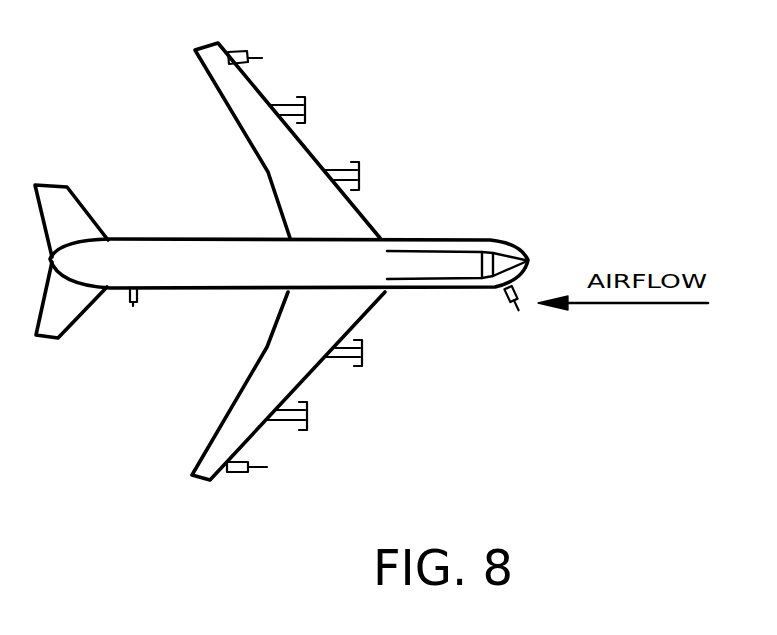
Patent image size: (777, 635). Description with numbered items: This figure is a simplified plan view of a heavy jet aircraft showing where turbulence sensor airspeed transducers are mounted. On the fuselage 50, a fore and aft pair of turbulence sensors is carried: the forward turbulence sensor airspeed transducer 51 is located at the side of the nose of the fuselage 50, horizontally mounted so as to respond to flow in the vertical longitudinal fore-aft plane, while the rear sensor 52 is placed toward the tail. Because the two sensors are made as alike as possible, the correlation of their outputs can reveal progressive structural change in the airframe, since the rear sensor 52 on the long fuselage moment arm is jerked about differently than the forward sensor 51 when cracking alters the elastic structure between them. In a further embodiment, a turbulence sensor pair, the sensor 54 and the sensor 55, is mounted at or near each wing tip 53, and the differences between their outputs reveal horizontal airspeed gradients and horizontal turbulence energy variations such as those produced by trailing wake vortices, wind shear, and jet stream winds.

The fuselage 50 is at (173, 250).
The turbulence sensor airspeed transducer 51 is at (507, 297).
The rear sensor 52 is at (138, 296).
The wing tip 53 is at (220, 77).
The turbulence sensor 54 is at (240, 471).
The turbulence sensor 55 is at (248, 49).